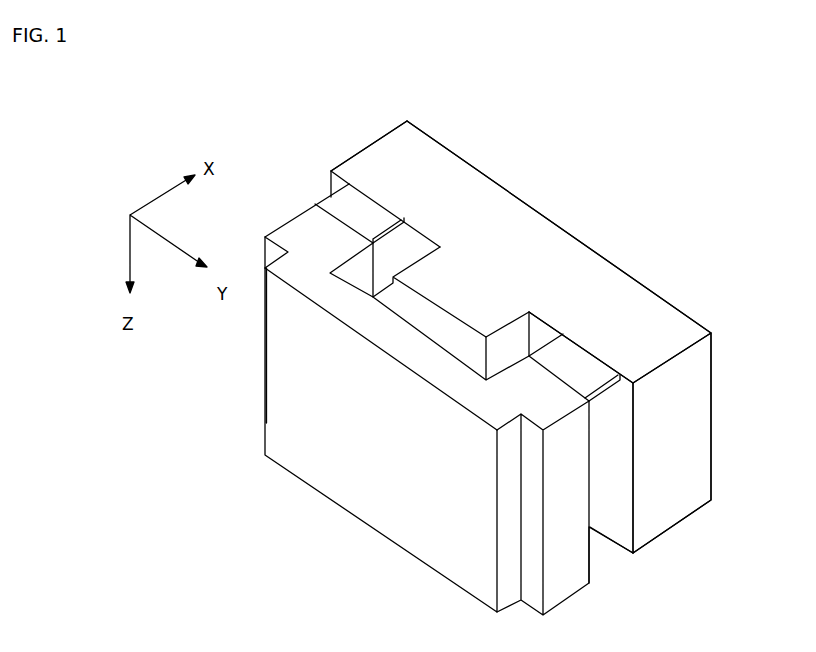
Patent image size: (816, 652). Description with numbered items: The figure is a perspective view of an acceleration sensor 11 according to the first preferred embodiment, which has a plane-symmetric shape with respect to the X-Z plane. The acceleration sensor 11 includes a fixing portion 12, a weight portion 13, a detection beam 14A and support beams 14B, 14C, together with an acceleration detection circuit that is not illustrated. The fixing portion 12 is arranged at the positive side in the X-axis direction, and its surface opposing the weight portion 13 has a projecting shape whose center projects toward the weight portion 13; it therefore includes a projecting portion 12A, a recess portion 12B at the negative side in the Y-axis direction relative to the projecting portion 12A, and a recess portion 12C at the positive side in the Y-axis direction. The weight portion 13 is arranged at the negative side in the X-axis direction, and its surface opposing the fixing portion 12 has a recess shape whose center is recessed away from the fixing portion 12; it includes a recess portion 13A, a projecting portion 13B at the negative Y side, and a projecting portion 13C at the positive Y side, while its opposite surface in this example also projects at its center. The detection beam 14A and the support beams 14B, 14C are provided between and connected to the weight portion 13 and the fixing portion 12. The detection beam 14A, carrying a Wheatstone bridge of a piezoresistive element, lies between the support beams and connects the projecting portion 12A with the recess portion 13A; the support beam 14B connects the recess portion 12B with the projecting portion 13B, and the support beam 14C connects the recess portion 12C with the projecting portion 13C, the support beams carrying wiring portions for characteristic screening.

The acceleration sensor 11 is at (316, 105).
The fixing portion 12 is at (404, 119).
The projecting portion 12A is at (492, 281).
The recess portion 12B is at (403, 200).
The recess portion 12C is at (634, 329).
The weight portion 13 is at (270, 266).
The recess portion 13A is at (409, 355).
The projecting portion 13B is at (308, 227).
The projecting portion 13C is at (557, 401).
The detection beam 14A is at (400, 295).
The support beam 14B is at (352, 207).
The support beam 14C is at (578, 362).